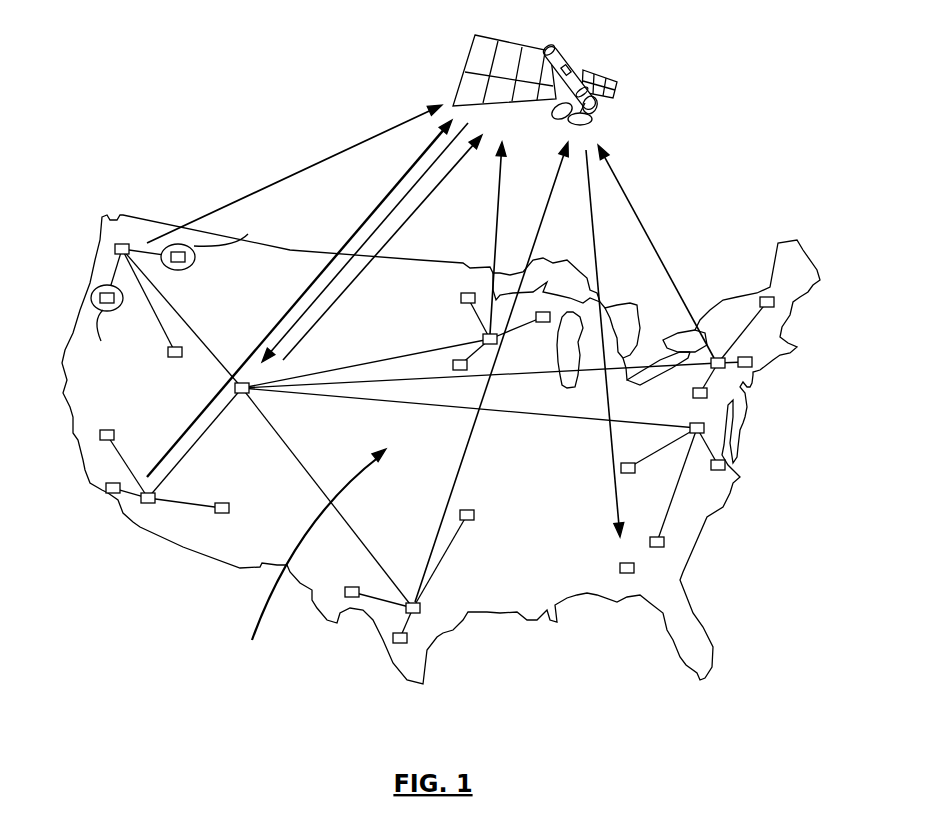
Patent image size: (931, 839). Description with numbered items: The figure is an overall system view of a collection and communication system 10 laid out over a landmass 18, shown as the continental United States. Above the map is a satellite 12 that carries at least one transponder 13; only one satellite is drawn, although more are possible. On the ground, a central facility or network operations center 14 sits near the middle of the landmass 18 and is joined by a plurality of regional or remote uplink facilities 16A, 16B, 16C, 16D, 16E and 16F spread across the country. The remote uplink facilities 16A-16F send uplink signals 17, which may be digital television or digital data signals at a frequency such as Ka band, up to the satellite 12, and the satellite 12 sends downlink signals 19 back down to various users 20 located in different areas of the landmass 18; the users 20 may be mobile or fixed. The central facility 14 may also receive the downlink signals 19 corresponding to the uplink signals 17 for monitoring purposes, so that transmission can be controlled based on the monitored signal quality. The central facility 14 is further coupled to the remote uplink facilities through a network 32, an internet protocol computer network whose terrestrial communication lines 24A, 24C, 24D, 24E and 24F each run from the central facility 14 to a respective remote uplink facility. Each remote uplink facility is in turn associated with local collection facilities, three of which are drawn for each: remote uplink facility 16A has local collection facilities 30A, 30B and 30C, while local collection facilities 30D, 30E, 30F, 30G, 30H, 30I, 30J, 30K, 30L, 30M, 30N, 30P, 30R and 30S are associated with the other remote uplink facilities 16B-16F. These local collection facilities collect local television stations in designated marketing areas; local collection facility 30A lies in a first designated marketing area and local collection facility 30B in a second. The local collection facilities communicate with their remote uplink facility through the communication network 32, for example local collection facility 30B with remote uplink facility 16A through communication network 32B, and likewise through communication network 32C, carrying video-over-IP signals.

The collection and communication system 10 is at (152, 140).
The satellite 12 is at (546, 71).
The transponder 13 is at (557, 62).
The central facility or network operations center 14 is at (242, 394).
The regional or remote uplink facility 16A is at (121, 243).
The regional or remote uplink facility 16B is at (148, 504).
The regional or remote uplink facility 16C is at (483, 337).
The regional or remote uplink facility 16D is at (725, 358).
The regional or remote uplink facility 16E is at (690, 425).
The regional or remote uplink facility 16F is at (420, 605).
The uplink signals 17 is at (290, 178).
The landmass 18 is at (705, 632).
The downlink signals 19 is at (413, 187).
The users 20 is at (620, 565).
The communication line 24A is at (175, 312).
The communication line 24C is at (352, 364).
The communication line 24D is at (510, 376).
The communication line 24E is at (524, 415).
The communication line 24F is at (307, 468).
The local collection facility 30A is at (122, 296).
The local collection facility 30B is at (194, 256).
The local collection facility 30C is at (177, 360).
The local collection facility 30D is at (110, 429).
The local collection facility 30E is at (226, 514).
The local collection facility 30F is at (108, 493).
The local collection facility 30G is at (460, 298).
The local collection facility 30H is at (541, 323).
The local collection facility 30I is at (462, 372).
The local collection facility 30J is at (356, 587).
The local collection facility 30K is at (472, 510).
The local collection facility 30L is at (393, 638).
The local collection facility 30M is at (762, 301).
The local collection facility 30N is at (745, 371).
The local collection facility 30P is at (693, 396).
The local collection facility 30R is at (664, 542).
The local collection facility 30S is at (631, 475).
The communication network 32 is at (312, 558).
The communication network 32B is at (147, 243).
The communication network 32C is at (197, 336).